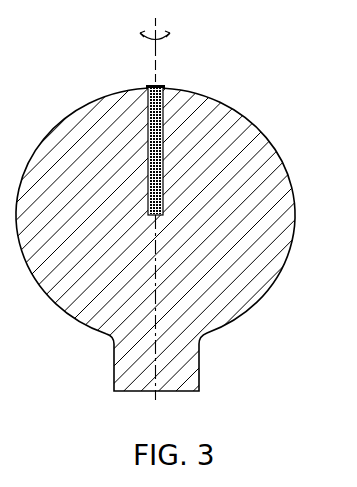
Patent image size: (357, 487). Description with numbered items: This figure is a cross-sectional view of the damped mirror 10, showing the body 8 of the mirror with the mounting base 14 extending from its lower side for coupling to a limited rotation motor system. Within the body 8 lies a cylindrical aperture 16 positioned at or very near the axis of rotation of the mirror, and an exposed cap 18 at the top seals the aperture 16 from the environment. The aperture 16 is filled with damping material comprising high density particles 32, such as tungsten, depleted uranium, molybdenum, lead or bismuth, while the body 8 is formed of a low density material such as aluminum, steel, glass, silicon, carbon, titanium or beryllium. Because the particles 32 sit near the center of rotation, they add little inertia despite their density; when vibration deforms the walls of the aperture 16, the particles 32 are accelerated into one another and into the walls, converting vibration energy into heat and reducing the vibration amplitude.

The body 8 is at (284, 213).
The damped mirror 10 is at (301, 93).
The mounting base 14 is at (202, 369).
The cylindrical aperture 16 is at (147, 152).
The exposed cap 18 is at (147, 85).
The high density particles 32 is at (165, 146).